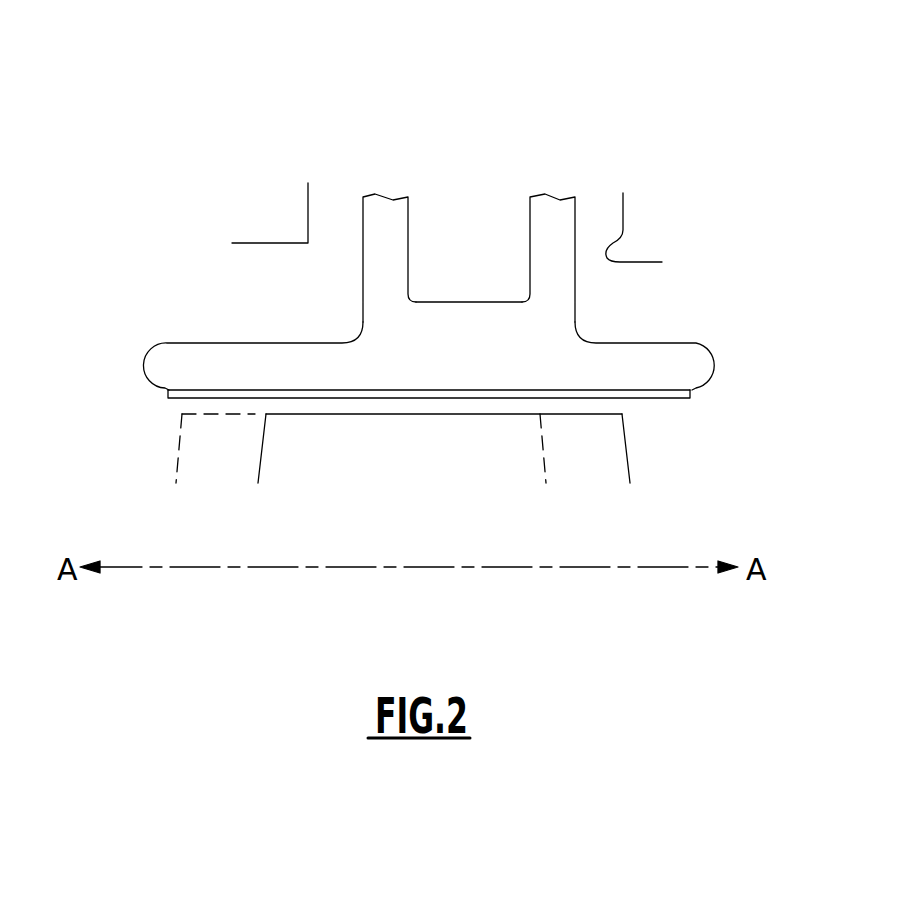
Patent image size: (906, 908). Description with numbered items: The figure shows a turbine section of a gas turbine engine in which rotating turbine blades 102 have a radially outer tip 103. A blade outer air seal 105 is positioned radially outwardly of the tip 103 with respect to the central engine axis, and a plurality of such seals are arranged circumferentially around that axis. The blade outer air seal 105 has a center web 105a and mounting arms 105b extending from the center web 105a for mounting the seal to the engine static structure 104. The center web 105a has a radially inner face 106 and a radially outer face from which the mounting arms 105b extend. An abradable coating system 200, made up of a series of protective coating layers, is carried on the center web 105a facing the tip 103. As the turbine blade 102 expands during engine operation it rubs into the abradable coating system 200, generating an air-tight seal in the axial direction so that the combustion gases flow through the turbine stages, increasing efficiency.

The blade outer air seal 105 is at (445, 275).
The center web 105a is at (467, 373).
The mounting arms 105b is at (396, 199).
The static structure 104 is at (308, 198).
The radially inner face 106 is at (367, 388).
The abradable coating system 200 is at (597, 398).
The radially outer tip 103 is at (490, 417).
The turbine blade 102 is at (293, 414).